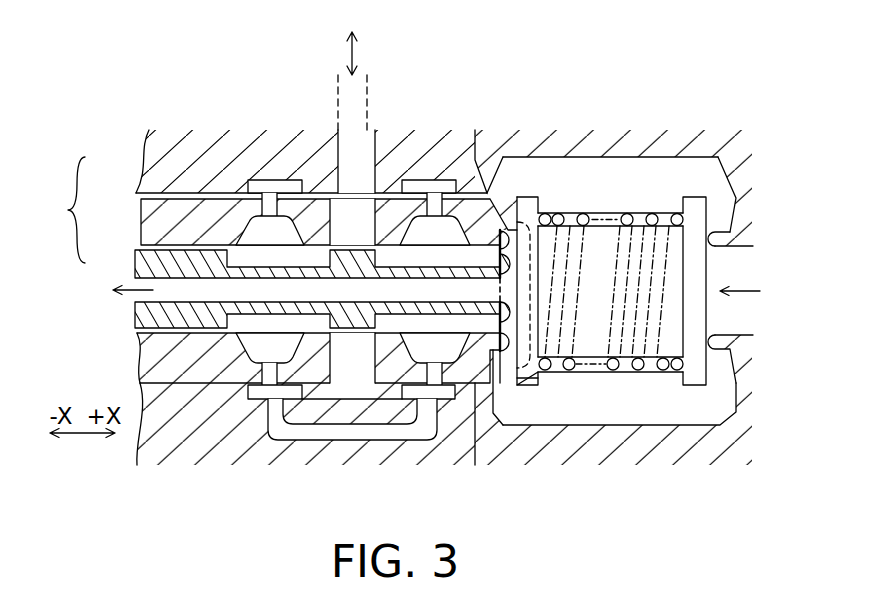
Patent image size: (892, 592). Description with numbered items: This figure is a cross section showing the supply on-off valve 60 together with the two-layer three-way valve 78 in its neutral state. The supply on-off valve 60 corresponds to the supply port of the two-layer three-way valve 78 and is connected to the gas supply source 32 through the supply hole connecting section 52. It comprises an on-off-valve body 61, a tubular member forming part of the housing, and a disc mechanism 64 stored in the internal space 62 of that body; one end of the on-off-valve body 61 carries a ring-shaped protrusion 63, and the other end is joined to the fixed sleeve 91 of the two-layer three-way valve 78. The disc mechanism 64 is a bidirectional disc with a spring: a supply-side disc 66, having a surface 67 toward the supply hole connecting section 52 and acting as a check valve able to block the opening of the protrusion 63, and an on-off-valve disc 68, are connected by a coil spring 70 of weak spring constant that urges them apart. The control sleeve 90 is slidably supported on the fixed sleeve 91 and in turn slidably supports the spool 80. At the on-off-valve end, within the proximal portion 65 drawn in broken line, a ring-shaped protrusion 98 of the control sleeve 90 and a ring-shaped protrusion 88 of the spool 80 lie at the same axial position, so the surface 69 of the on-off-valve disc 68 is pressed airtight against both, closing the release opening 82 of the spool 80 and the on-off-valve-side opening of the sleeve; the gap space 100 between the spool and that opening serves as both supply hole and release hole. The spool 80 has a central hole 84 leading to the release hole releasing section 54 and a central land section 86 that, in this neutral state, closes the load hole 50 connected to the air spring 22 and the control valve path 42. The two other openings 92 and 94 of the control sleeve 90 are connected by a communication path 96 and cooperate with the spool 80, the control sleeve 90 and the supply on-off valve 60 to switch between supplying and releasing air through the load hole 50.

The air spring 22 is at (351, 41).
The control valve path 42 is at (362, 103).
The load hole 50 is at (348, 222).
The proximal portion on on-off-valve end side 65 is at (519, 195).
The disc mechanism 64 is at (581, 196).
The internal space 62 is at (627, 157).
The on-off-valve body 61 is at (657, 157).
The supply on-off valve 60 is at (727, 126).
The ring-shaped protrusion 63 is at (716, 232).
The supply hole connecting section 52 is at (734, 276).
The gas supply source 32 is at (765, 292).
The release hole releasing section 54 is at (103, 289).
The two-layer three-way valve 78 is at (61, 210).
The fixed sleeve 91 is at (168, 170).
The control sleeve 90 is at (163, 220).
The spool 80 is at (153, 267).
The central hole 84 is at (185, 293).
The central land section 86 is at (336, 258).
The ring-shaped protrusion 98 is at (500, 252).
The ring-shaped protrusion 88 is at (500, 290).
The gap space 100 is at (500, 326).
The opening 94 is at (232, 398).
The communication path 96 is at (364, 441).
The opening 92 is at (472, 347).
The release opening 82 is at (497, 368).
The surface 69 is at (505, 392).
The surface 67 is at (706, 387).
The on-off-valve disc 68 is at (532, 378).
The coil spring 70 is at (626, 366).
The supply-side disc 66 is at (686, 378).